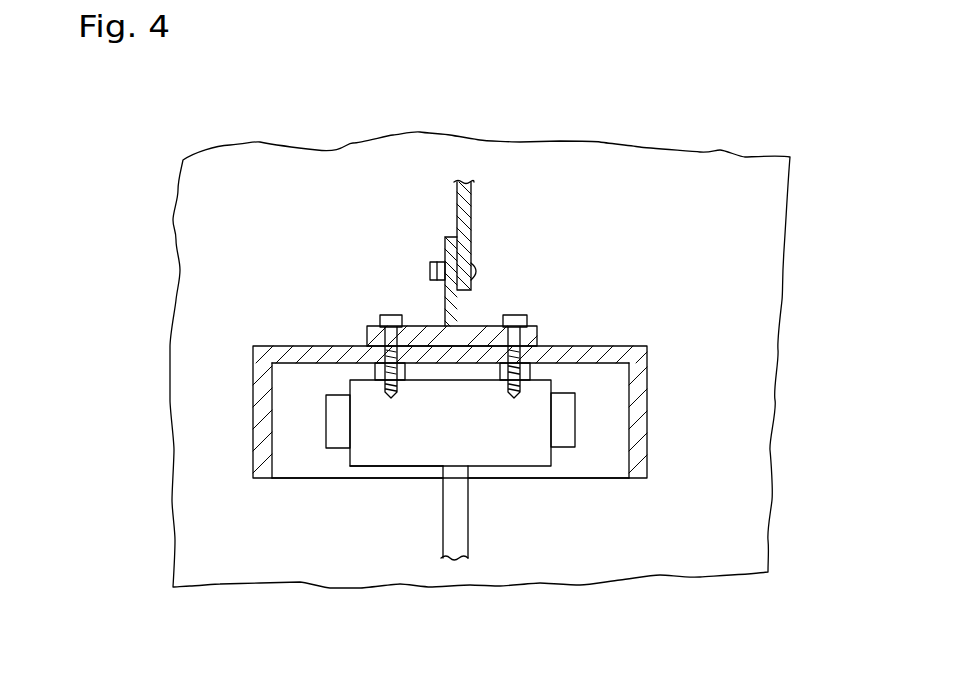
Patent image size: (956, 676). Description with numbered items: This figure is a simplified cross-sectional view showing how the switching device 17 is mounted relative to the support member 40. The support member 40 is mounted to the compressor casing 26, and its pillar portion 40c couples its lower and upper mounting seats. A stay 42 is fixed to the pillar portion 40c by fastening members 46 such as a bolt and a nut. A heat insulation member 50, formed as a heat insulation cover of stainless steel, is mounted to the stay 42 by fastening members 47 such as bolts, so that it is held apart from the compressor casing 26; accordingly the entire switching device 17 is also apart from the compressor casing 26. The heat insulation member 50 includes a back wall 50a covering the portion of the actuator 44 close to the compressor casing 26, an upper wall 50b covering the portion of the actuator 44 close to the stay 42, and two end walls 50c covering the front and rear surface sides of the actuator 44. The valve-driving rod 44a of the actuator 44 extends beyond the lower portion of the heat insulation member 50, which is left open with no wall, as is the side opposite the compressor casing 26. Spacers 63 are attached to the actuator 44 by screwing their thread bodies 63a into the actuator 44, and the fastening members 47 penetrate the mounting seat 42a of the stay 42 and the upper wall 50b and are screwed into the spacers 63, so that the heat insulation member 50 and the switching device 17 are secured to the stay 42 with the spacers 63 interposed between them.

The compressor casing 26 is at (697, 152).
The support member 40 is at (535, 231).
The pillar portion 40c is at (472, 193).
The stay 42 is at (455, 305).
The mounting seat 42a is at (530, 325).
The fastening members 46 is at (478, 270).
The fastening members 47 is at (390, 315).
The heat insulation member 50 is at (457, 413).
The back wall 50a is at (303, 468).
The upper wall 50b is at (302, 345).
The end walls 50c is at (253, 437).
The switching device 17 is at (380, 467).
The actuator 44 is at (517, 457).
The valve-driving rod 44a is at (445, 537).
The spacers 63 is at (564, 445).
The thread bodies 63a is at (512, 392).